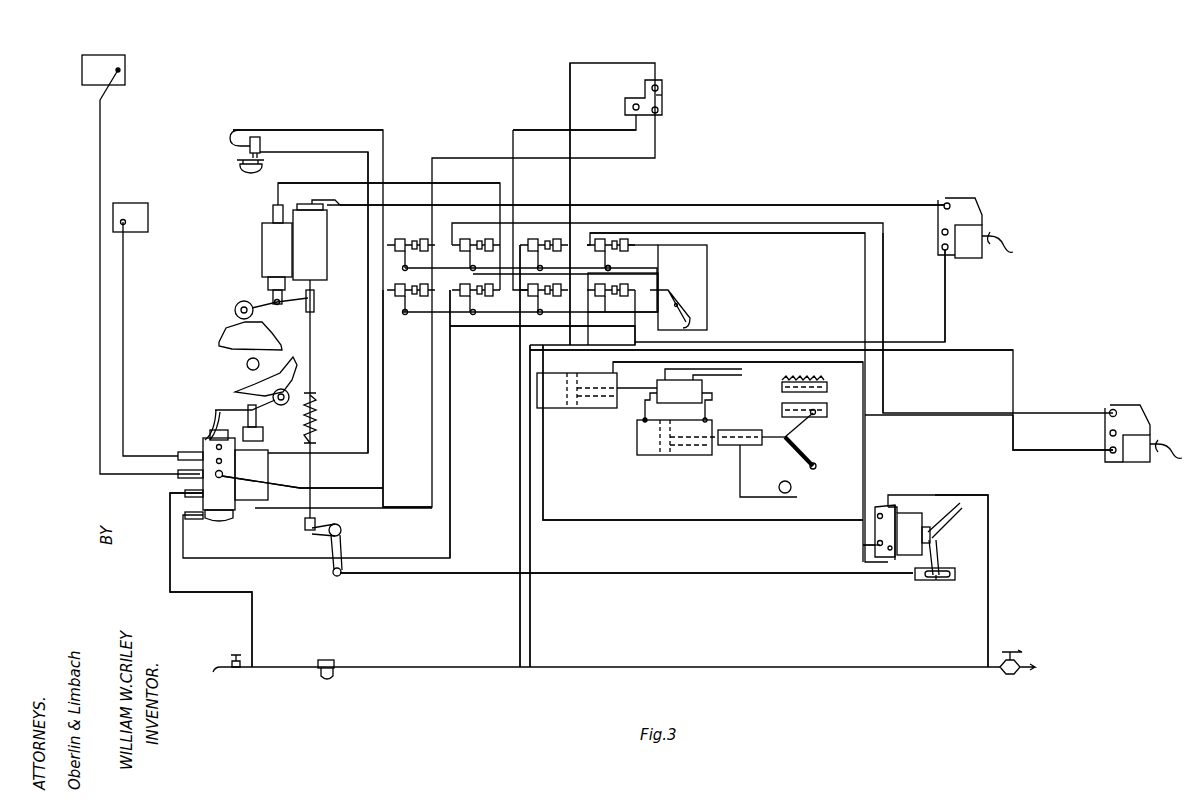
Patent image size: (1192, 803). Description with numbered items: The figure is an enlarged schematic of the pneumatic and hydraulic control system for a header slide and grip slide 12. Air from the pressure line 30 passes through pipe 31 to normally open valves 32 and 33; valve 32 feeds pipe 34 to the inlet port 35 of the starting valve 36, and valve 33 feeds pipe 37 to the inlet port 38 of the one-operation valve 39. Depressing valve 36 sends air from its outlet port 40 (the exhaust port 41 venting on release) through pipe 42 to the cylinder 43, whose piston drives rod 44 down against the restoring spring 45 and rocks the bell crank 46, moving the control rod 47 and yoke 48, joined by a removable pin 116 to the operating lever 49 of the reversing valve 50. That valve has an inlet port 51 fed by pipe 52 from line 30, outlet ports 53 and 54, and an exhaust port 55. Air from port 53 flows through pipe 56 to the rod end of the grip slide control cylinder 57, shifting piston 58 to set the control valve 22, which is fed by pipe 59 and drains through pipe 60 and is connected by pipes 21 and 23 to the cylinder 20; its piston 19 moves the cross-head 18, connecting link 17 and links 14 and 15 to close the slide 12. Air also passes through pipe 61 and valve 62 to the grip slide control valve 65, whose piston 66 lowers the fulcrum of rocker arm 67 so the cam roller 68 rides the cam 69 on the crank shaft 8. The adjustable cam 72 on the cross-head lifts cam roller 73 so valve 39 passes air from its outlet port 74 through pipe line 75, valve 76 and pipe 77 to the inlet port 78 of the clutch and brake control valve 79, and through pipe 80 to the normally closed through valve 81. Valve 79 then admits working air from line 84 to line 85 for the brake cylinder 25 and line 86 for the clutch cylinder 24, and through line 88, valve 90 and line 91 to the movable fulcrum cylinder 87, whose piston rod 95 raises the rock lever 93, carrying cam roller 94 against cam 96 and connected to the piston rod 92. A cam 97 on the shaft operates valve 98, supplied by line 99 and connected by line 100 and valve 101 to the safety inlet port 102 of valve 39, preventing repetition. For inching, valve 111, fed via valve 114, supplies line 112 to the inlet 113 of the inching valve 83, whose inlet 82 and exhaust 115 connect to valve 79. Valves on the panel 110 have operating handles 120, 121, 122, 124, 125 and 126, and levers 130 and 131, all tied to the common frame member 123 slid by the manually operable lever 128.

The crank shaft 8 is at (247, 364).
The grip slide 12 is at (828, 410).
The link 14 is at (800, 425).
The link 15 is at (815, 455).
The connecting link 17 is at (770, 440).
The cross-head 18 is at (742, 430).
The piston 19 is at (684, 456).
The two-way fluid pressure operated cylinder 20 is at (648, 456).
The pipe 21 is at (706, 415).
The control valve 22 is at (702, 389).
The pipe 23 is at (645, 412).
The clutch operating cylinder 24 is at (145, 212).
The brake operating cylinder 25 is at (125, 77).
The pressure line 30 is at (593, 668).
The pipe 31 is at (518, 591).
The valve 32 is at (558, 290).
The valve 33 is at (536, 239).
The pipe 34 is at (780, 350).
The inlet port 35 is at (942, 250).
The starting valve 36 is at (968, 258).
The pipe 37 is at (570, 187).
The inlet port 38 is at (658, 88).
The one-operation valve 39 is at (662, 96).
The outlet port 40 is at (944, 204).
The exhaust port 41 is at (941, 234).
The pipe 42 is at (745, 205).
The cylinder 43 is at (318, 233).
The rod 44 is at (315, 288).
The restoring spring 45 is at (316, 415).
The bell crank 46 is at (343, 542).
The control rod 47 is at (704, 576).
The yoke 48 is at (918, 580).
The operating lever 49 is at (938, 555).
The reversing valve 50 is at (910, 520).
The inlet port 51 is at (898, 505).
The pipe 52 is at (988, 548).
The outlet port 53 is at (886, 560).
The outlet port 54 is at (880, 507).
The exhaust port 55 is at (870, 545).
The pipe 56 is at (808, 362).
The grip slide control cylinder 57 is at (553, 410).
The piston 58 is at (578, 410).
The pipe 59 is at (728, 367).
The pipe 60 is at (738, 374).
The pipe 61 is at (462, 183).
The valve 62 is at (468, 239).
The grip slide control valve 65 is at (262, 263).
The piston 66 is at (272, 298).
The rocker arm 67 is at (270, 306).
The cam roller 68 is at (235, 310).
The cam 69 is at (224, 333).
The adjustable cam 72 is at (762, 497).
The cam roller 73 is at (792, 488).
The outlet port 74 is at (633, 104).
The pipe line 75 is at (525, 130).
The valve 76 is at (462, 284).
The pipe 77 is at (450, 522).
The inlet port 78 is at (193, 519).
The clutch and brake control valve 79 is at (228, 518).
The pipe 80 is at (472, 328).
The through valve 81 is at (621, 239).
The inlet 82 is at (1112, 409).
The inching valve 83 is at (1140, 425).
The line 84 is at (212, 590).
The line 85 is at (145, 474).
The line 86 is at (150, 456).
The movable fulcrum cylinder 87 is at (262, 463).
The line 88 is at (330, 488).
The valve 90 is at (395, 284).
The line 91 is at (420, 383).
The piston rod 92 is at (210, 415).
The rock lever 93 is at (228, 398).
The cam roller 94 is at (289, 392).
The piston rod 95 is at (258, 425).
The cam 96 is at (294, 357).
The cam 97 is at (246, 168).
The valve 98 is at (262, 142).
The line 99 is at (368, 350).
The line 100 is at (375, 130).
The valve 101 is at (397, 239).
The safety inlet port 102 is at (658, 111).
The panel 110 is at (708, 253).
The valve 111 is at (625, 272).
The line 112 is at (703, 342).
The inlet 113 is at (1110, 454).
The valve 114 is at (532, 597).
The exhaust 115 is at (1108, 433).
The removable pin 116 is at (937, 580).
The operating handle 120 is at (542, 266).
The operating handle 121 is at (478, 258).
The operating handle 122 is at (410, 266).
The common frame member 123 is at (610, 266).
The operating handle 124 is at (542, 315).
The operating handle 125 is at (476, 310).
The operating handle 126 is at (406, 314).
The manually operable lever 128 is at (688, 305).
The lever 130 is at (618, 243).
The lever 131 is at (650, 290).